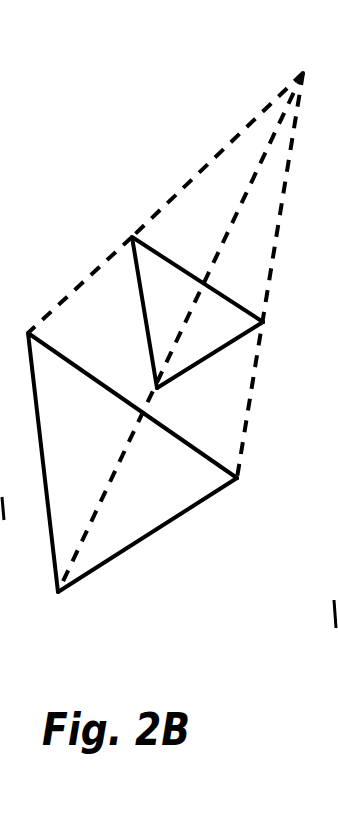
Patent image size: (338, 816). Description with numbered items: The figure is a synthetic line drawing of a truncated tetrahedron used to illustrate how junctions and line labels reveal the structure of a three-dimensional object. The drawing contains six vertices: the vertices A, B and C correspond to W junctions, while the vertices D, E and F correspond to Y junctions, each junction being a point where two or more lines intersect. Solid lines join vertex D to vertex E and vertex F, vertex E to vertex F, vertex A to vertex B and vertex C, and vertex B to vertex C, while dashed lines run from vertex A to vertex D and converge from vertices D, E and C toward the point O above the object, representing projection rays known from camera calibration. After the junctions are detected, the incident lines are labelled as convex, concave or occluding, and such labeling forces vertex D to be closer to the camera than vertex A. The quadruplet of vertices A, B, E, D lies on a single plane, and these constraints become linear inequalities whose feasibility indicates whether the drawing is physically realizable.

The projection center / viewpoint O is at (198, 305).
The vertex A is at (118, 456).
The vertex B is at (133, 561).
The vertex C is at (254, 497).
The vertex D is at (145, 294).
The vertex E is at (187, 355).
The vertex F is at (279, 338).